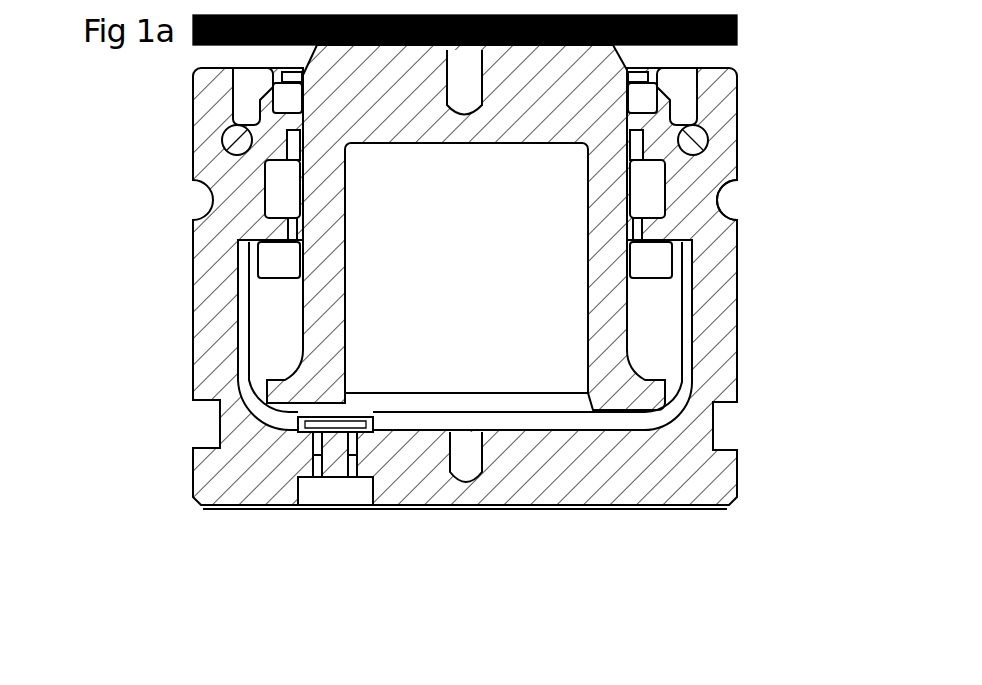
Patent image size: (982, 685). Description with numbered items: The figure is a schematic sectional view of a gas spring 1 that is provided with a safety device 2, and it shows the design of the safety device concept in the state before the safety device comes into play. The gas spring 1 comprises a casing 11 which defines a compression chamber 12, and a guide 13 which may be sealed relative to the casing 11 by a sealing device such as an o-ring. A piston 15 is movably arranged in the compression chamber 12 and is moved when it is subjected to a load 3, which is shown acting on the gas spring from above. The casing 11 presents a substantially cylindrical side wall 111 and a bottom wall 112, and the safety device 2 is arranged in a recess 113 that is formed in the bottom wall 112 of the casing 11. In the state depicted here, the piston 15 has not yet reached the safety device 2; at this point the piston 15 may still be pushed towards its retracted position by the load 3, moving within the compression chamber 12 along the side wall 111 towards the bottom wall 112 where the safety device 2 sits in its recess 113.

The gas spring 1 is at (118, 140).
The safety device 2 is at (332, 432).
The load 3 is at (738, 24).
The casing 11 is at (770, 357).
The side wall 111 is at (727, 308).
The bottom wall 112 is at (560, 478).
The recess 113 is at (320, 478).
The compression chamber 12 is at (672, 287).
The guide 13 is at (672, 168).
The piston 15 is at (607, 230).